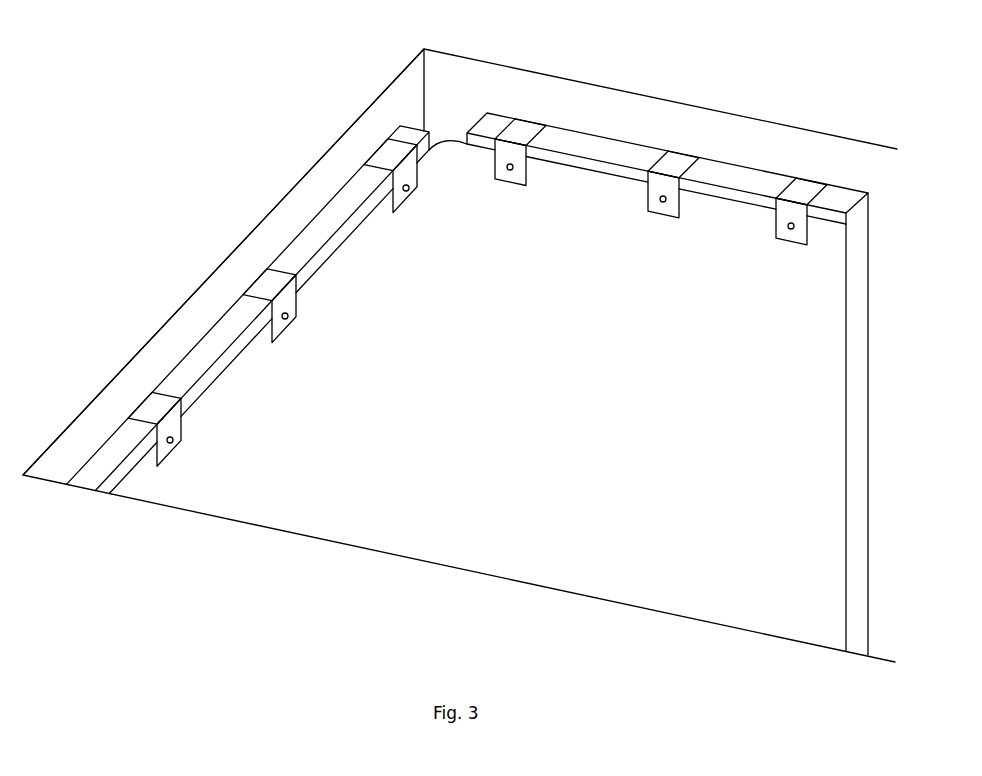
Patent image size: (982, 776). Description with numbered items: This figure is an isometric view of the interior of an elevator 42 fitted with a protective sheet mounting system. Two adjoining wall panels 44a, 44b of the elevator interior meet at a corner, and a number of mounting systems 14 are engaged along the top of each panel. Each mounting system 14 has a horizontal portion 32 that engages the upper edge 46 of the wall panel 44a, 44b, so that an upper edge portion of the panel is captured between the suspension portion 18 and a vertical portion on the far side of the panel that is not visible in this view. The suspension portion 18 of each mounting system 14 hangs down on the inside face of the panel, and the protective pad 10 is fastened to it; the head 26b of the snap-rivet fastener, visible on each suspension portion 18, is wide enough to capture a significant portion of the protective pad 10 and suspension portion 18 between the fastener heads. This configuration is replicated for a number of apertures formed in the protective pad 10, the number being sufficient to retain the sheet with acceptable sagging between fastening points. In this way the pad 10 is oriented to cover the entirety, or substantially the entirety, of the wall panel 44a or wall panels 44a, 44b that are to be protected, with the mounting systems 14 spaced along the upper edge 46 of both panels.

The protective pad 10 is at (645, 377).
The mounting system 14 is at (461, 286).
The suspension portion 18 is at (182, 435).
The head 26b is at (170, 443).
The horizontal portion 32 is at (151, 393).
The elevator 42 is at (256, 170).
The wall panel 44a is at (860, 628).
The wall panel 44b is at (220, 370).
The upper edge 46 is at (309, 246).